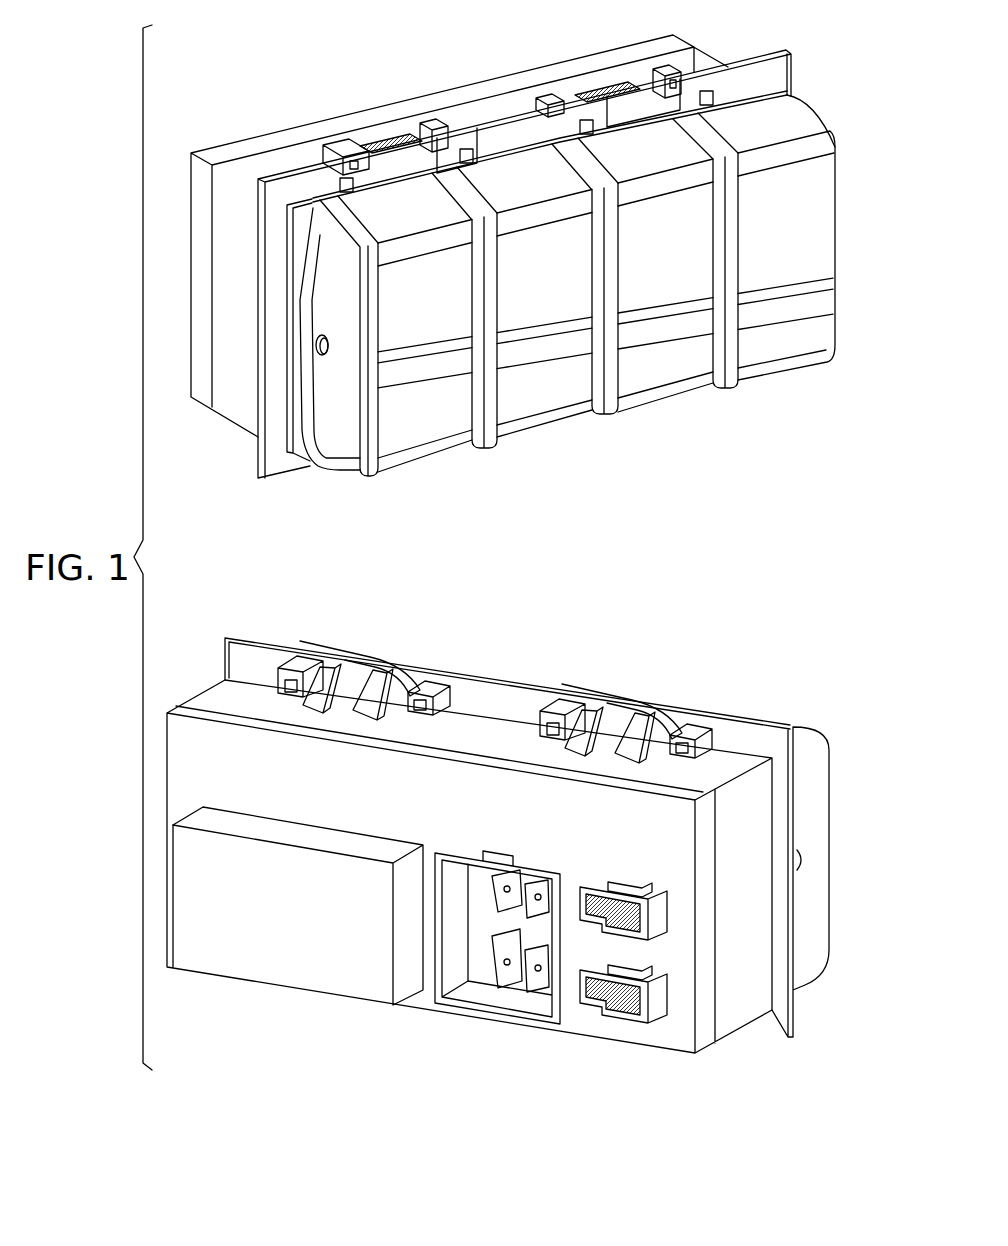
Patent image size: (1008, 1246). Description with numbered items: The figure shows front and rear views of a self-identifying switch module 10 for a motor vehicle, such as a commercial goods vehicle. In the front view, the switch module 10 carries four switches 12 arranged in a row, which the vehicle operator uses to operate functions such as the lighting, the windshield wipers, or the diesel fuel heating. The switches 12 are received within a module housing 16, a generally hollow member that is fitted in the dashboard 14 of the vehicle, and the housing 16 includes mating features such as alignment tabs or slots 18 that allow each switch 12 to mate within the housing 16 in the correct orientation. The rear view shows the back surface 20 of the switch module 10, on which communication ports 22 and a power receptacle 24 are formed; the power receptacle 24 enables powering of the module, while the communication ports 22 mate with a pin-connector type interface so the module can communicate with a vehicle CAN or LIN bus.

The self-identifying switch module 10 is at (497, 572).
The switches 12 is at (422, 455).
The dashboard 14 is at (482, 124).
The module housing 16 is at (280, 128).
The alignment tabs or slots 18 is at (557, 136).
The back surface 20 is at (181, 737).
The communication ports 22 is at (662, 940).
The power receptacle 24 is at (509, 983).